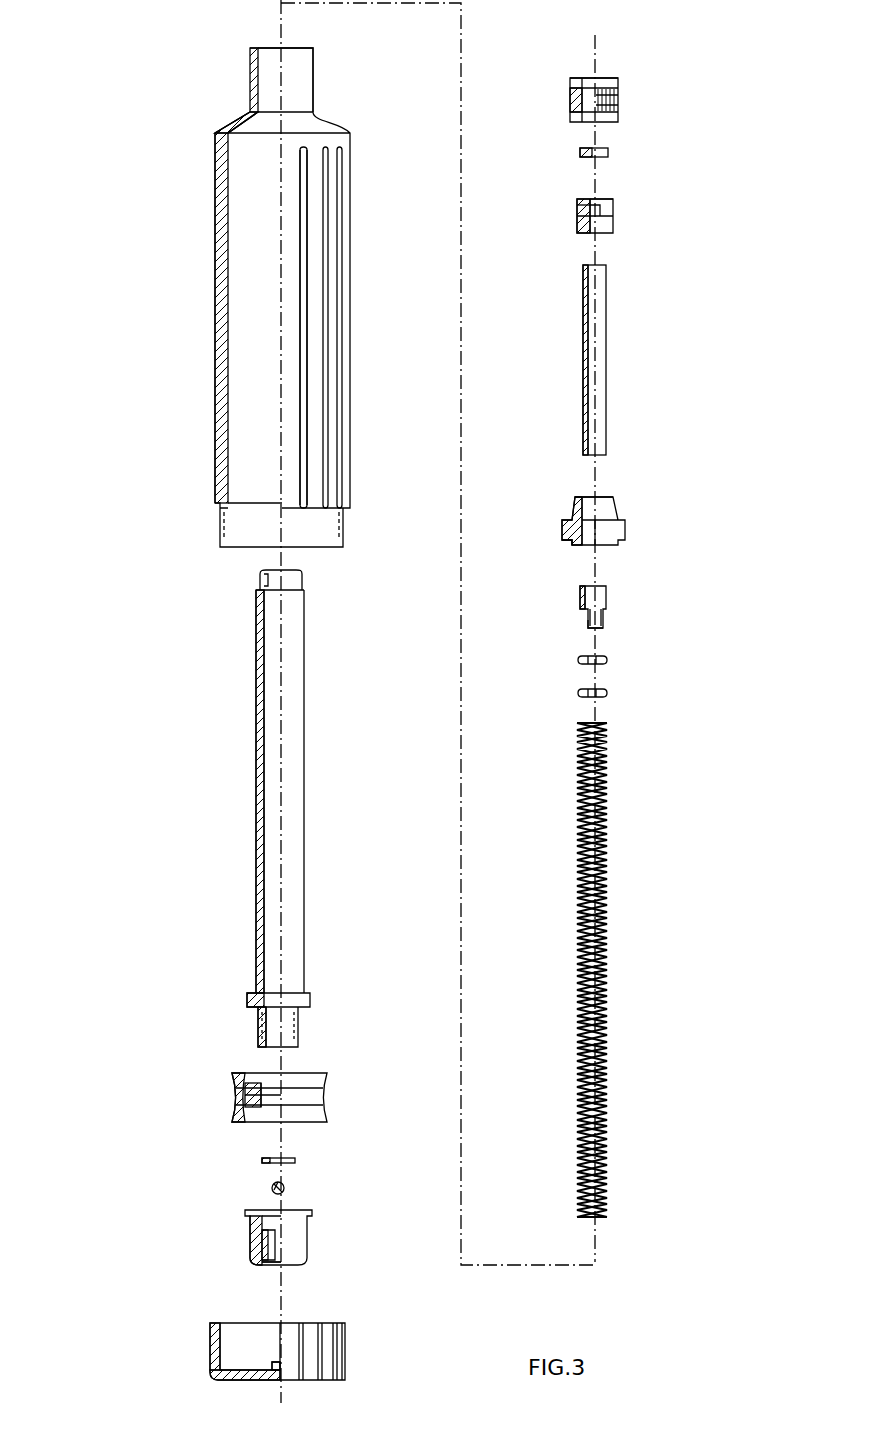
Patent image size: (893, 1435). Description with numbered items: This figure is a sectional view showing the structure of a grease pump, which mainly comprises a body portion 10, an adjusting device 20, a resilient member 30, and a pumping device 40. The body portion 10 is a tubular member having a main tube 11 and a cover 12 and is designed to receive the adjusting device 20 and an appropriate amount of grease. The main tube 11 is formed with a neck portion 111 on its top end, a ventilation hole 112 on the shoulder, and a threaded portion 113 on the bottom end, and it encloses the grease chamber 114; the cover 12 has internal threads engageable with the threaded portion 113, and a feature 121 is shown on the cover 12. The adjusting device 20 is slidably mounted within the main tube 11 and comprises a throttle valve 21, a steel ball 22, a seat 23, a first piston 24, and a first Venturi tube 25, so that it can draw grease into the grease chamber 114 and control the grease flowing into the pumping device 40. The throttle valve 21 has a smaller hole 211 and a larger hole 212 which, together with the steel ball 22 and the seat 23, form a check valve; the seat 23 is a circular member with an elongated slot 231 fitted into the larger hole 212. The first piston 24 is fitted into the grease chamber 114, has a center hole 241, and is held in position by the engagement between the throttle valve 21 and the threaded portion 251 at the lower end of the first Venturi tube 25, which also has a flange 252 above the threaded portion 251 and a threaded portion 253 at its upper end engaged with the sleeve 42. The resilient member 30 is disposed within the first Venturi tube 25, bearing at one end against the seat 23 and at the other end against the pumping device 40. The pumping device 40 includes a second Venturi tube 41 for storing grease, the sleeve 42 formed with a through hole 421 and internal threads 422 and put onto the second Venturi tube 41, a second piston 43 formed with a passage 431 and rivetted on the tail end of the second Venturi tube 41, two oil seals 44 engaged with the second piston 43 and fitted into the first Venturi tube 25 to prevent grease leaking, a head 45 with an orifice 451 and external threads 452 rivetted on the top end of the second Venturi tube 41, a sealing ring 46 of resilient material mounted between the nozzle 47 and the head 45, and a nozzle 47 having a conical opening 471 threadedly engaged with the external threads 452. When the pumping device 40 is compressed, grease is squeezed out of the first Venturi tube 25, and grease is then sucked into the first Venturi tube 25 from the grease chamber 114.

The body portion 10 is at (156, 410).
The main tube 11 is at (350, 310).
The neck portion 111 is at (273, 50).
The ventilation hole 112 is at (240, 128).
The threaded portion 113 is at (218, 530).
The grease chamber 114 is at (256, 332).
The cover 12 is at (345, 1352).
The cap notch 121 is at (228, 1345).
The adjusting device 20 is at (152, 990).
The throttle valve 21 is at (307, 1240).
The smaller hole 211 is at (278, 1264).
The larger hole 212 is at (258, 1244).
The steel ball 22 is at (285, 1188).
The seat 23 is at (295, 1159).
The elongated slot 231 is at (276, 1163).
The first piston 24 is at (327, 1096).
The center hole 241 is at (262, 1100).
The first Venturi tube 25 is at (304, 789).
The threaded portion 251 is at (298, 1025).
The flange 252 is at (312, 1000).
The threaded portion 253 is at (302, 582).
The resilient member 30 is at (607, 915).
The pumping device 40 is at (662, 450).
The second Venturi tube 41 is at (600, 355).
The sleeve 42 is at (625, 530).
The through hole 421 is at (592, 500).
The internal threads 422 is at (574, 542).
The second piston 43 is at (606, 600).
The passage 431 is at (594, 624).
The oil seals 44 is at (607, 660).
The head 45 is at (613, 228).
The orifice 451 is at (590, 200).
The external threads 452 is at (577, 210).
The sealing ring 46 is at (608, 153).
The nozzle 47 is at (618, 100).
The conical opening 471 is at (593, 78).